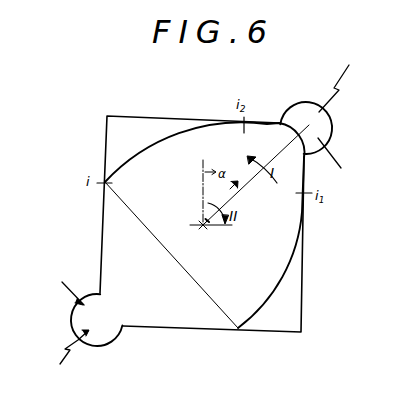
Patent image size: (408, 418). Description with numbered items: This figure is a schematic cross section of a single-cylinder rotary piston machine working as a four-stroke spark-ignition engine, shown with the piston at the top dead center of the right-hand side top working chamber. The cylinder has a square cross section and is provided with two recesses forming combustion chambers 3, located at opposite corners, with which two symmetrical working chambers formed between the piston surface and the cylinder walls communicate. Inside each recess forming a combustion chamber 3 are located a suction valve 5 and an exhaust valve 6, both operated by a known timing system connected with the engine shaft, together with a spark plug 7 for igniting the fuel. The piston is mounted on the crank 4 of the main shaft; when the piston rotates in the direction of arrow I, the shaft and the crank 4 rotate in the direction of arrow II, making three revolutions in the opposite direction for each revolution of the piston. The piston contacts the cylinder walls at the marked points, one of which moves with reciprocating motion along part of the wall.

The combustion chamber 3 is at (114, 342).
The crank 4 is at (205, 228).
The suction valve 5 is at (287, 113).
The exhaust valve 6 is at (322, 143).
The spark plug 7 is at (327, 110).